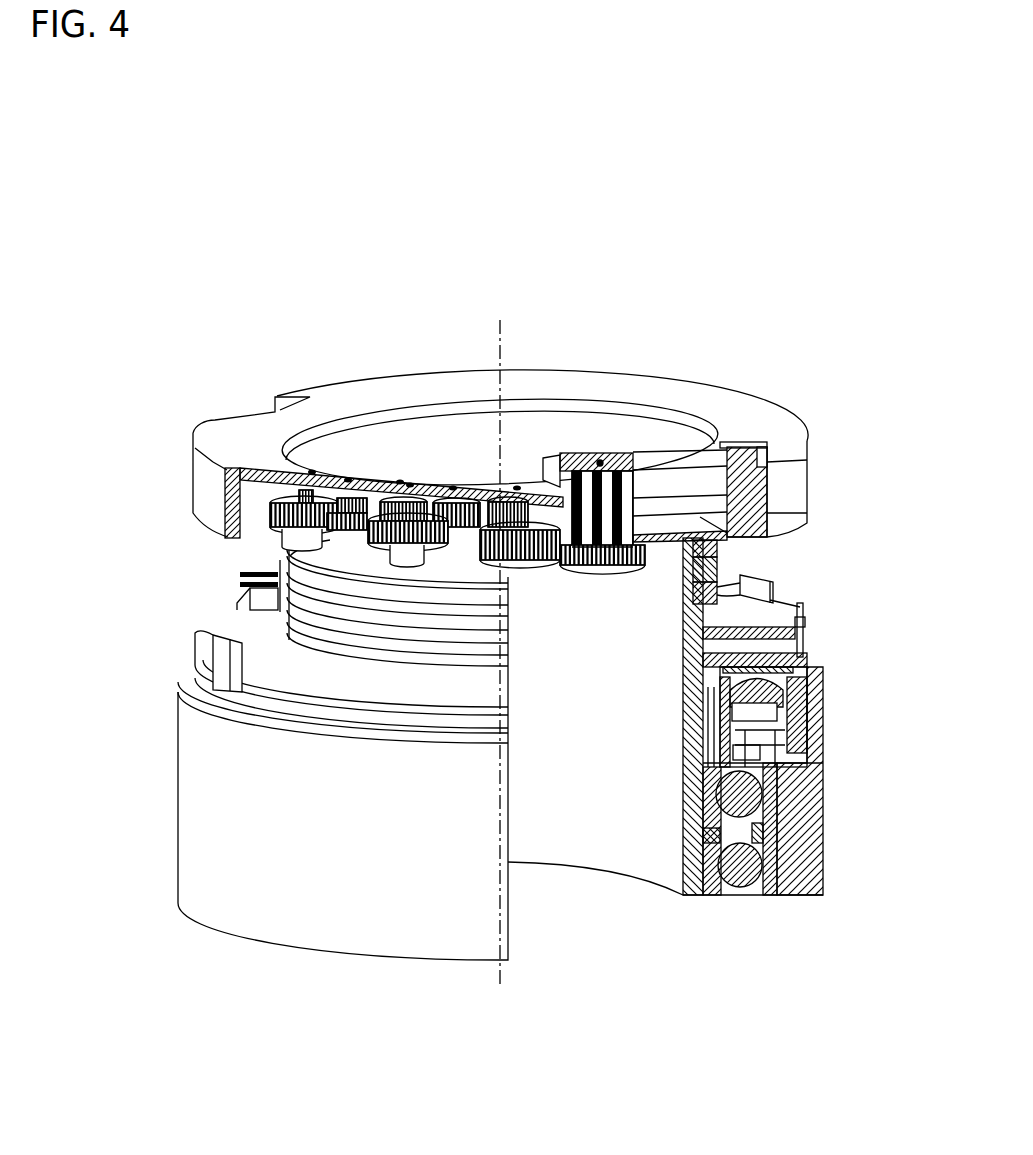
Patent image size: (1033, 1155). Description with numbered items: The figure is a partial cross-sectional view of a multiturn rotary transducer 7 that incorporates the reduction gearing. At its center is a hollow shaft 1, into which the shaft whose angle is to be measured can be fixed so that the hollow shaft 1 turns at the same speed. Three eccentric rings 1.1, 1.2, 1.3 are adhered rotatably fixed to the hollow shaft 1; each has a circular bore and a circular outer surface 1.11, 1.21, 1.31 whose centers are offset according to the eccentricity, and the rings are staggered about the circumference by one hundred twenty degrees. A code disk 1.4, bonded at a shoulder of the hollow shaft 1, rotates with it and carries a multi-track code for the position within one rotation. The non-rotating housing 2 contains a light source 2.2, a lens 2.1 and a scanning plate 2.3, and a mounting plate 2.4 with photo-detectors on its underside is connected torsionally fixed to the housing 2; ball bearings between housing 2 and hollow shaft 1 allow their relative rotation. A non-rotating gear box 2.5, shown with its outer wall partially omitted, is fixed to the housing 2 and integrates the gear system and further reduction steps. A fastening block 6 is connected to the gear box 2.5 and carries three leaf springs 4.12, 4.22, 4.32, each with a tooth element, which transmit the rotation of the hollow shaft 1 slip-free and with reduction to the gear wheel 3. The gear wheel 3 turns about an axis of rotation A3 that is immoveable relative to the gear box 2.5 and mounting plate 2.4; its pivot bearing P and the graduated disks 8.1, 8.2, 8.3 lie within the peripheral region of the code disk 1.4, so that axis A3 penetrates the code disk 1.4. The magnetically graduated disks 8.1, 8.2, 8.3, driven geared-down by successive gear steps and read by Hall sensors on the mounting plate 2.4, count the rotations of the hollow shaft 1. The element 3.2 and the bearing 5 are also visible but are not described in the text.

The hollow shaft 1 is at (692, 883).
The eccentric ring 1.1 is at (727, 550).
The eccentric ring 1.2 is at (720, 565).
The eccentric ring 1.3 is at (774, 592).
The code disk 1.4 is at (807, 655).
The circular outer surface 1.11 is at (290, 555).
The circular outer surface 1.21 is at (230, 590).
The circular outer surface 1.31 is at (250, 607).
The housing 2 is at (788, 868).
The lens 2.1 is at (820, 740).
The light source 2.2 is at (822, 787).
The scanning plate 2.3 is at (815, 712).
The mounting plate 2.4 is at (807, 620).
The gear box 2.5 is at (777, 430).
The gear wheel 3 is at (553, 457).
The ring section 3.2 is at (772, 528).
The leaf spring 4.12 is at (647, 467).
The leaf spring 4.22 is at (667, 487).
The leaf spring 4.32 is at (748, 437).
The bearing 5 is at (737, 867).
The fastening block 6 is at (770, 465).
The rotary transducer 7 is at (840, 856).
The graduated disk 8.1 is at (527, 560).
The graduated disk 8.2 is at (420, 555).
The graduated disk 8.3 is at (355, 560).
The axis of rotation A3 is at (607, 562).
The pivot bearing P is at (598, 462).